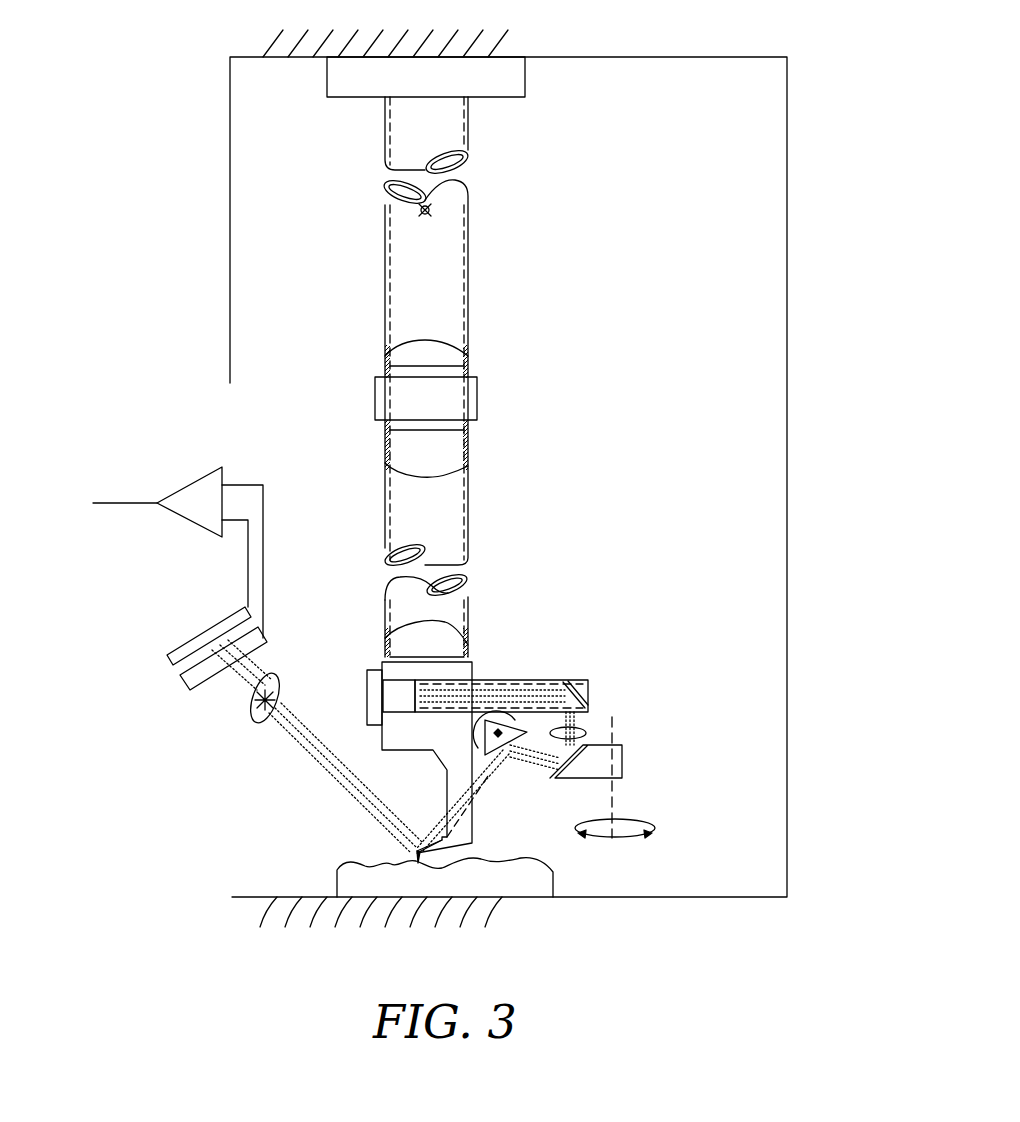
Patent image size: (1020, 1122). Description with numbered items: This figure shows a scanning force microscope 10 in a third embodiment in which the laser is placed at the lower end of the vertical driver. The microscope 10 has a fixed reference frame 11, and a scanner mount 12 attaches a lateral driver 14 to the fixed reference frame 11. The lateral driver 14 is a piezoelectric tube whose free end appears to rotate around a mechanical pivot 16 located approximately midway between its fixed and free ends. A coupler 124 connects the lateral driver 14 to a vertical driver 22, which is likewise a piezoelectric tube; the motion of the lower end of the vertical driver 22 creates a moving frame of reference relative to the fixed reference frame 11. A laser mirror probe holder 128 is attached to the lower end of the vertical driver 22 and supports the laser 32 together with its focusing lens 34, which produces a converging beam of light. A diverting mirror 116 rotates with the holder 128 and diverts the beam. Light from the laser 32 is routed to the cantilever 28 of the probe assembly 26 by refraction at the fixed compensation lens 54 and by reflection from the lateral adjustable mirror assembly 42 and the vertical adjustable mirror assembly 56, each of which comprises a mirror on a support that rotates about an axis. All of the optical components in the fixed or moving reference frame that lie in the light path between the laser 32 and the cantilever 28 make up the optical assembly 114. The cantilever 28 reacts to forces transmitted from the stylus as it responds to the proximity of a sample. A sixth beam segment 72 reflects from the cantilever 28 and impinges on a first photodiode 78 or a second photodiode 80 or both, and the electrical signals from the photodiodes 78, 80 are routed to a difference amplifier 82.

The microscope 10 is at (803, 108).
The fixed reference frame 11 is at (632, 55).
The scanner mount 12 is at (500, 75).
The lateral driver 14 is at (438, 285).
The mechanical pivot 16 is at (430, 208).
The vertical driver 22 is at (415, 510).
The coupler 124 is at (463, 398).
The laser 32 is at (370, 693).
The focusing lens 34 is at (427, 683).
The laser mirror probe holder 128 is at (473, 670).
The diverting mirror 116 is at (568, 685).
The fixed compensation lens 54 is at (575, 728).
The vertical adjustable mirror assembly 56 is at (633, 757).
The optical assembly 114 is at (645, 793).
The lateral adjustable mirror assembly 42 is at (530, 819).
The probe assembly 26 is at (487, 837).
The cantilever 28 is at (417, 852).
The difference amplifier 82 is at (195, 492).
The first photodiode 78 is at (178, 660).
The second photodiode 80 is at (190, 682).
The sixth beam segment 72 is at (250, 708).